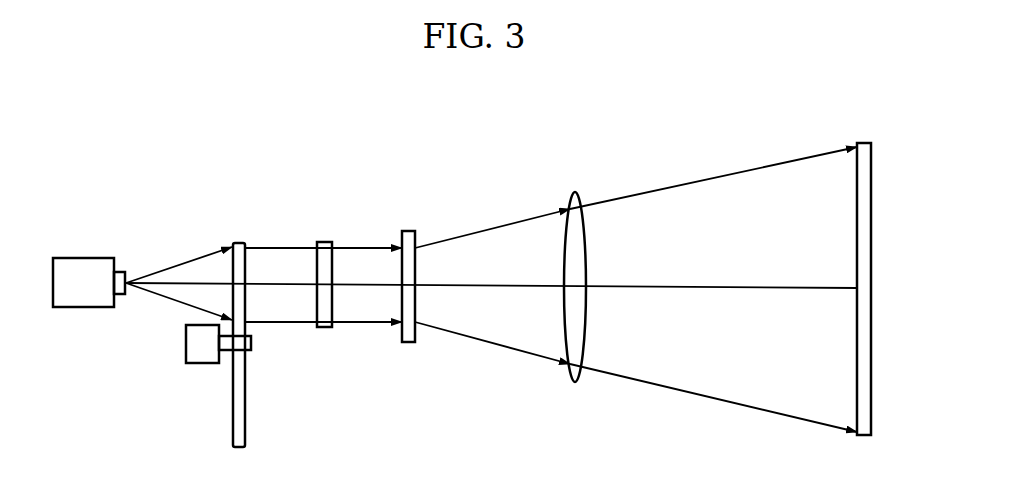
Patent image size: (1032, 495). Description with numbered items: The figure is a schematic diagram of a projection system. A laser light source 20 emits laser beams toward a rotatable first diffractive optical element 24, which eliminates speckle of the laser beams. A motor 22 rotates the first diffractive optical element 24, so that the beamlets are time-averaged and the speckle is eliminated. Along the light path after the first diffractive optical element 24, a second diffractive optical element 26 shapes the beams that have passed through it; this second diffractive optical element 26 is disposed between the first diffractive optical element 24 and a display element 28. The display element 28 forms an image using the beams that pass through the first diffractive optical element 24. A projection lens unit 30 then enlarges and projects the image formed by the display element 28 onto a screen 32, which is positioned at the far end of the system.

The laser light source 20 is at (76, 309).
The motor 22 is at (190, 365).
The first diffractive optical element 24 is at (245, 422).
The second diffractive optical element 26 is at (326, 240).
The display element 28 is at (411, 230).
The projection lens unit 30 is at (575, 192).
The screen 32 is at (871, 231).